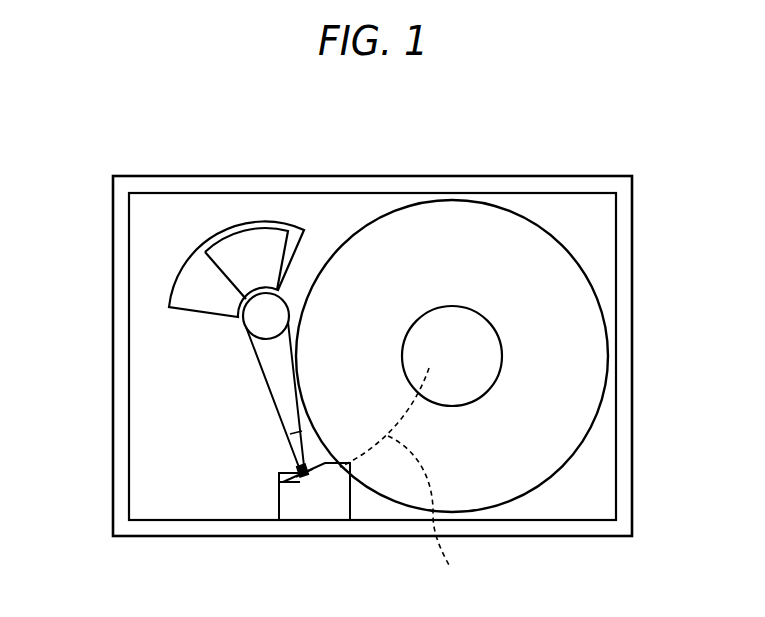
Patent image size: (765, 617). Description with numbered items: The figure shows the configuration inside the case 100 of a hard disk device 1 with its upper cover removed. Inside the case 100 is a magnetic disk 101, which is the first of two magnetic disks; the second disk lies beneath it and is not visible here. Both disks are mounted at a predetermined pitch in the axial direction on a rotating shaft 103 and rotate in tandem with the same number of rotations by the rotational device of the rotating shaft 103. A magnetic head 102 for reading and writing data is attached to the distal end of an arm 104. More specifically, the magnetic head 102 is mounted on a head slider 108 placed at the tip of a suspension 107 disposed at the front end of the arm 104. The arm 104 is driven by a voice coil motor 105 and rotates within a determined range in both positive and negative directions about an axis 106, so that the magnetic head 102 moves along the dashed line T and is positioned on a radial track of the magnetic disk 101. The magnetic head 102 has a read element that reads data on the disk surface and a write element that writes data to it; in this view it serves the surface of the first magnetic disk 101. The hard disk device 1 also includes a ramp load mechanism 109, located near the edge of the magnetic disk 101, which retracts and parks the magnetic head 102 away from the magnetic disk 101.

The hard disk device 1 is at (560, 125).
The case 100 is at (612, 176).
The magnetic disk 101 is at (575, 320).
The magnetic head 102 is at (298, 492).
The rotating shaft 103 is at (485, 340).
The arm 104 is at (273, 376).
The voice coil motor 105 is at (186, 248).
The axis 106 is at (259, 323).
The suspension 107 is at (287, 438).
The head slider 108 is at (304, 473).
The ramp load mechanism 109 is at (333, 506).
The dashed line T is at (400, 481).